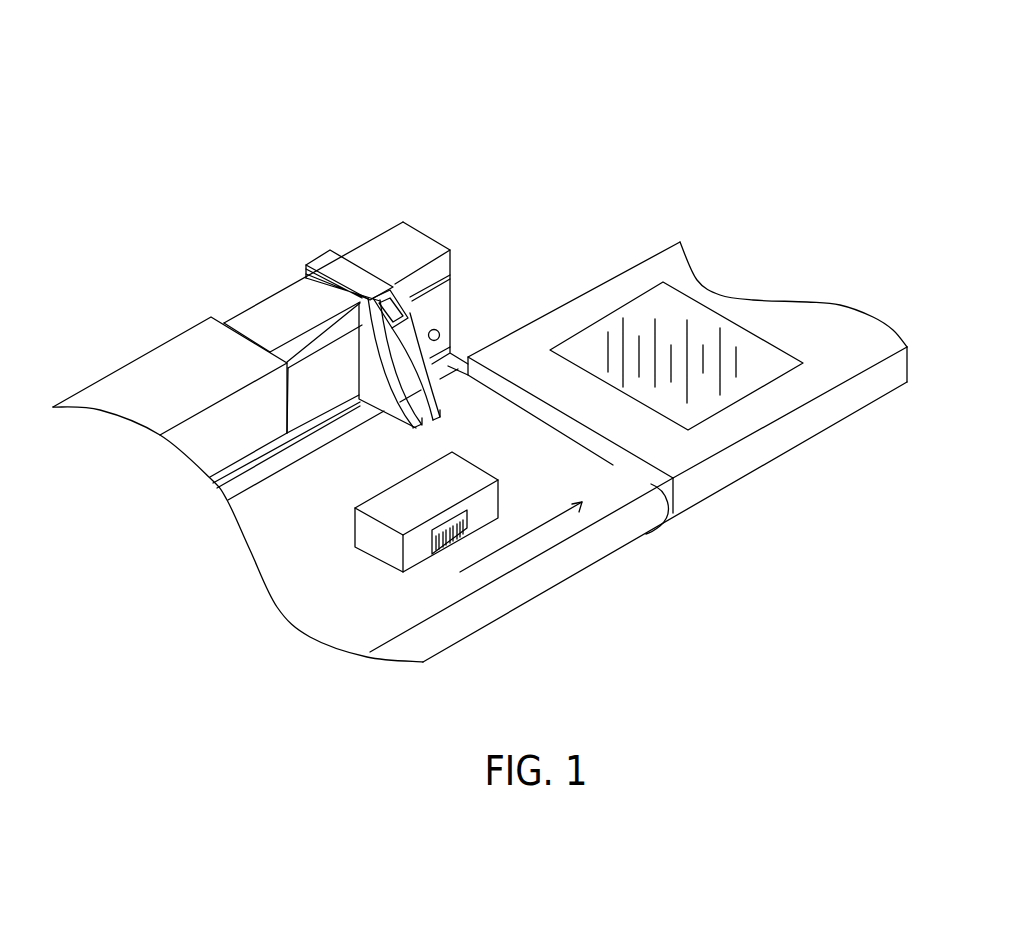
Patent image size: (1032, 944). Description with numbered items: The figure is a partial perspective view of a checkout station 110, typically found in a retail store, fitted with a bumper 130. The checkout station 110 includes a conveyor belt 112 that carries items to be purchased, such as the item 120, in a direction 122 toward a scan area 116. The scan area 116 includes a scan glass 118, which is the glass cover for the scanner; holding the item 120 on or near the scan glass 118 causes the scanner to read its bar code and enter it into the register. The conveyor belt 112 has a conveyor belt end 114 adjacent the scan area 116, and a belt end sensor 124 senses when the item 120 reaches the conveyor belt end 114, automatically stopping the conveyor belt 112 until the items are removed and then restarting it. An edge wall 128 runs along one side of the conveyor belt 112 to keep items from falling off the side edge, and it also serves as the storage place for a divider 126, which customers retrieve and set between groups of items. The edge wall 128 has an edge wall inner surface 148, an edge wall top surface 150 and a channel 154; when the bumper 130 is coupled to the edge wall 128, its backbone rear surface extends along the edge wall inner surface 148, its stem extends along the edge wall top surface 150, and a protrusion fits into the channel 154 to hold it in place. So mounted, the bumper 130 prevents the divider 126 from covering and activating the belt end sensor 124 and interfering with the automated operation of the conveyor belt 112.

The checkout station 110 is at (464, 87).
The conveyor belt 112 is at (317, 610).
The conveyor belt end 114 is at (613, 465).
The scan area 116 is at (647, 191).
The scan glass 118 is at (665, 300).
The item 120 is at (392, 512).
The direction 122 is at (513, 543).
The belt end sensor 124 is at (440, 336).
The divider 126 is at (183, 348).
The edge wall 128 is at (346, 293).
The bumper 130 is at (327, 267).
The edge wall inner surface 148 is at (314, 400).
The edge wall top surface 150 is at (262, 329).
The channel 154 is at (436, 280).